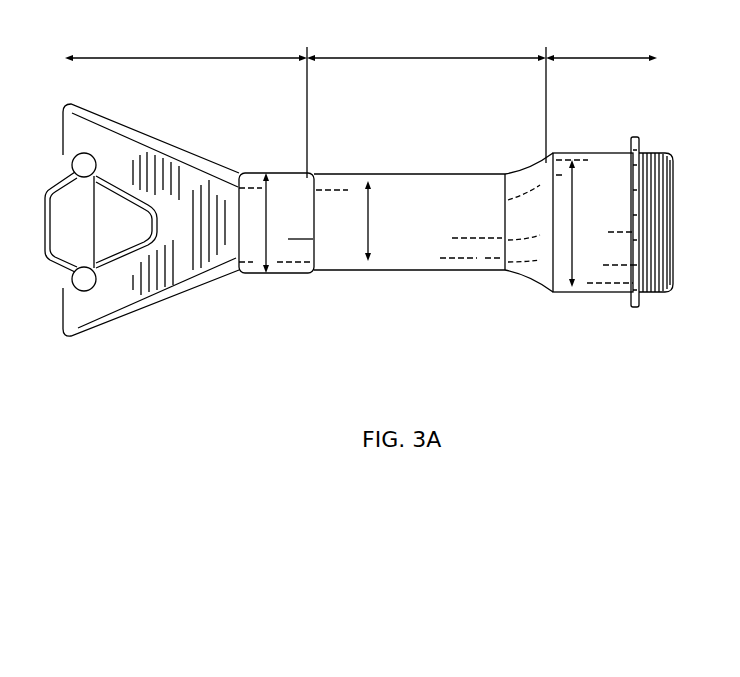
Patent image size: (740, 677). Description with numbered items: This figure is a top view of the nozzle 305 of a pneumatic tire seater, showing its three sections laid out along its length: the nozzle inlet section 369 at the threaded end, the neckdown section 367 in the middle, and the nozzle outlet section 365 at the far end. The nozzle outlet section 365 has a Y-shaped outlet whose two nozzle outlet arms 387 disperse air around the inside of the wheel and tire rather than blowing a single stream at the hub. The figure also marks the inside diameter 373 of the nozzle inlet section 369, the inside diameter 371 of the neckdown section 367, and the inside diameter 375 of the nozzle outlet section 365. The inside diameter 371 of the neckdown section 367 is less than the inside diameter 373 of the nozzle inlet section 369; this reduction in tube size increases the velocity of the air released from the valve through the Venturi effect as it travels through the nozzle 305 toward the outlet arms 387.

The nozzle 305 is at (359, 254).
The nozzle outlet arm 387 is at (140, 142).
The inside diameter of nozzle outlet section 375 is at (267, 225).
The inside diameter of neckdown section 371 is at (373, 222).
The inside diameter of nozzle inlet section 373 is at (575, 248).
The nozzle outlet section 365 is at (186, 104).
The neckdown section 367 is at (426, 96).
The nozzle inlet section 369 is at (601, 45).